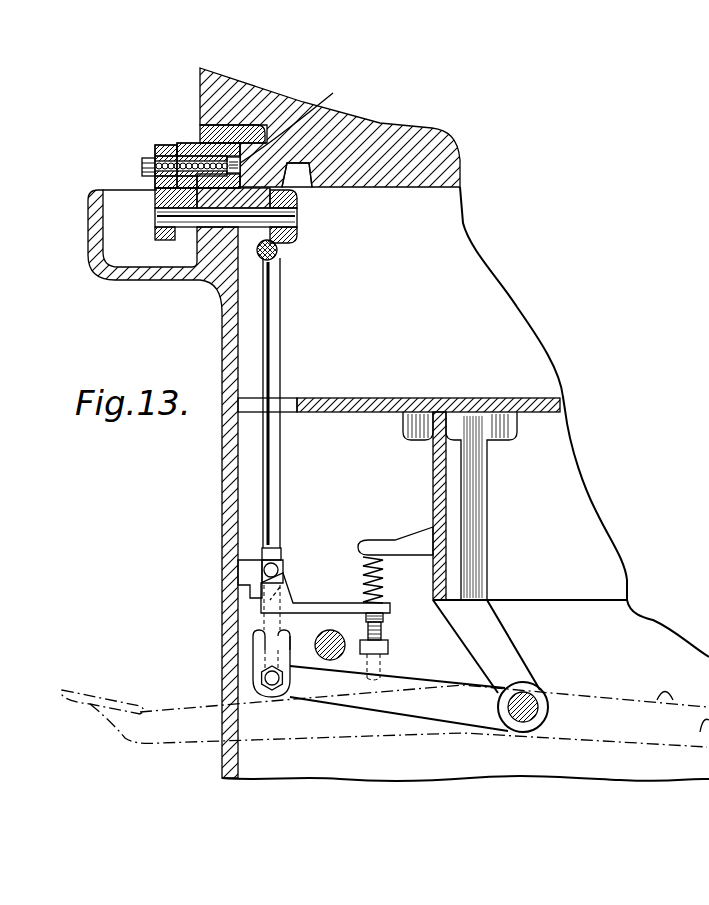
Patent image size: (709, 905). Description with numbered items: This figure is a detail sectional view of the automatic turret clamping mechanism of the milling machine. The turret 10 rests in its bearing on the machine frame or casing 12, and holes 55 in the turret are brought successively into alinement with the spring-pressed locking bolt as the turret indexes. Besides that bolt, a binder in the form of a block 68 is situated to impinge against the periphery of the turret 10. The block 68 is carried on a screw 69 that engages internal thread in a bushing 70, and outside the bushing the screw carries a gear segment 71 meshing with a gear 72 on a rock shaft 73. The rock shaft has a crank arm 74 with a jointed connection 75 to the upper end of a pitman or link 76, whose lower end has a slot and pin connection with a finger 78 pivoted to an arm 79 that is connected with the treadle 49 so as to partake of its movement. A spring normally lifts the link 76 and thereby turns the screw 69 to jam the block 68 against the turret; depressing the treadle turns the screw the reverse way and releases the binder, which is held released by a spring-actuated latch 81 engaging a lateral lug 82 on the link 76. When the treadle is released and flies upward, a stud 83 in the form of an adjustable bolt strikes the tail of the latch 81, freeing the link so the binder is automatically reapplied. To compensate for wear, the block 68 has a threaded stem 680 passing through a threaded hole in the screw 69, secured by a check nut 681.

The turret 10 is at (438, 177).
The machine frame 12 is at (358, 484).
The treadle 49 is at (404, 736).
The holes 55 is at (297, 180).
The block 68 is at (300, 119).
The screw 69 is at (177, 150).
The bushing 70 is at (197, 143).
The gear segment 71 is at (155, 181).
The gear 72 is at (155, 203).
The rock shaft 73 is at (220, 222).
The crank arm 74 is at (293, 237).
The jointed connection 75 is at (281, 263).
The pitman or link 76 is at (280, 323).
The finger 78 is at (300, 667).
The arm 79 is at (320, 708).
The latch 81 is at (317, 605).
The lateral lug 82 is at (280, 545).
The stud 83 is at (384, 630).
The threaded stem 680 is at (238, 130).
The check nut 681 is at (150, 158).